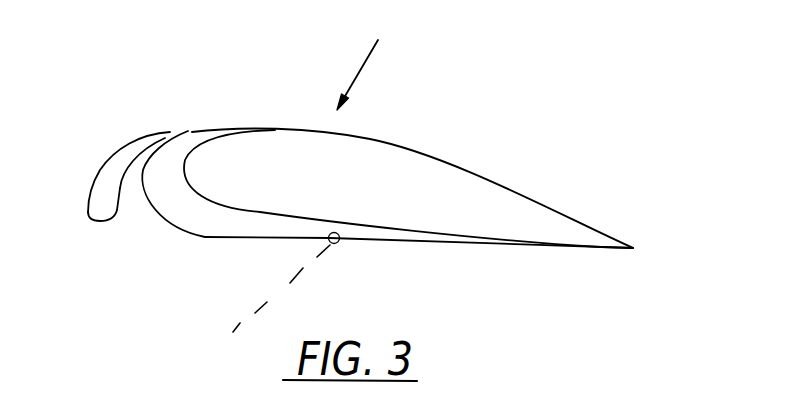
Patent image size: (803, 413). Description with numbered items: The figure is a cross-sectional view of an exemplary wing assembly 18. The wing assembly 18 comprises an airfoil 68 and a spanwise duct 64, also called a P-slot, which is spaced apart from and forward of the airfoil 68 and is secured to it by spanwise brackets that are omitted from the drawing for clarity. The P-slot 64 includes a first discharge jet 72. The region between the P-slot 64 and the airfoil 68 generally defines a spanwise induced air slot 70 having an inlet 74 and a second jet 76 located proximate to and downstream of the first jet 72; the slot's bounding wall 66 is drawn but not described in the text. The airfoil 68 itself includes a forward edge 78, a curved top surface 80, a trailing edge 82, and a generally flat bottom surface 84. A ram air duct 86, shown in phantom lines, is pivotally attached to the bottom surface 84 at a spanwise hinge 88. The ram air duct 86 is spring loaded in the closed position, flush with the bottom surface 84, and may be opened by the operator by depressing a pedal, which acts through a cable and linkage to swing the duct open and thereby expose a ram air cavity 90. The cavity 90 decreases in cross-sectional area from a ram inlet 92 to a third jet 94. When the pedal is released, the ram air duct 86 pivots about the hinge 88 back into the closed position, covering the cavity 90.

The wing assembly 18 is at (365, 63).
The spanwise duct 64 is at (97, 170).
The slat lower surface 66 is at (88, 207).
The airfoil 68 is at (478, 181).
The spanwise induced air slot 70 is at (127, 208).
The first discharge jet 72 is at (182, 132).
The inlet 74 is at (142, 223).
The second jet 76 is at (158, 158).
The forward edge 78 is at (193, 230).
The curved top surface 80 is at (393, 145).
The trailing edge 82 is at (635, 248).
The bottom surface 84 is at (542, 250).
The ram air duct 86 is at (262, 301).
The spanwise hinge 88 is at (341, 246).
The ram air cavity 90 is at (238, 225).
The ram inlet 92 is at (282, 238).
The third jet 94 is at (204, 135).